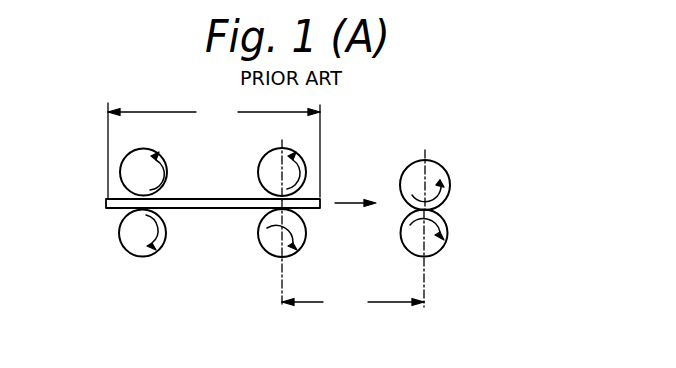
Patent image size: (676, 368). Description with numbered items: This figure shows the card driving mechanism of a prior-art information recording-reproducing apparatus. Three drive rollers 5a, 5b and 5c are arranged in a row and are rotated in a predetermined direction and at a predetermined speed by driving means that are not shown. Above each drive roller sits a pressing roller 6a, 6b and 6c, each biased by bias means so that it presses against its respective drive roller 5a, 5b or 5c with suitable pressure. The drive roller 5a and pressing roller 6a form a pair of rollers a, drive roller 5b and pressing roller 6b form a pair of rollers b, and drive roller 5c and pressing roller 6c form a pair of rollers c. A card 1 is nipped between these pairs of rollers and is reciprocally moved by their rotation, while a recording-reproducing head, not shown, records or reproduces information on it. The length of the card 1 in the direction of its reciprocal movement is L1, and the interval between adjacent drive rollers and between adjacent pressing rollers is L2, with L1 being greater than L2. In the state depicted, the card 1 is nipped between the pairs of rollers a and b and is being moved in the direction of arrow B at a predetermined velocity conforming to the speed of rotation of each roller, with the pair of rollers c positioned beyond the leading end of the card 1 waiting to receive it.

The card 1 is at (106, 203).
The drive roller 5a is at (130, 253).
The drive roller 5b is at (268, 243).
The drive roller 5c is at (443, 250).
The pressing roller 6a is at (160, 157).
The pressing roller 6b is at (264, 162).
The pressing roller 6c is at (443, 165).
The length of the card L1 is at (214, 149).
The interval between the rollers L2 is at (353, 300).
The direction of movement B is at (349, 205).